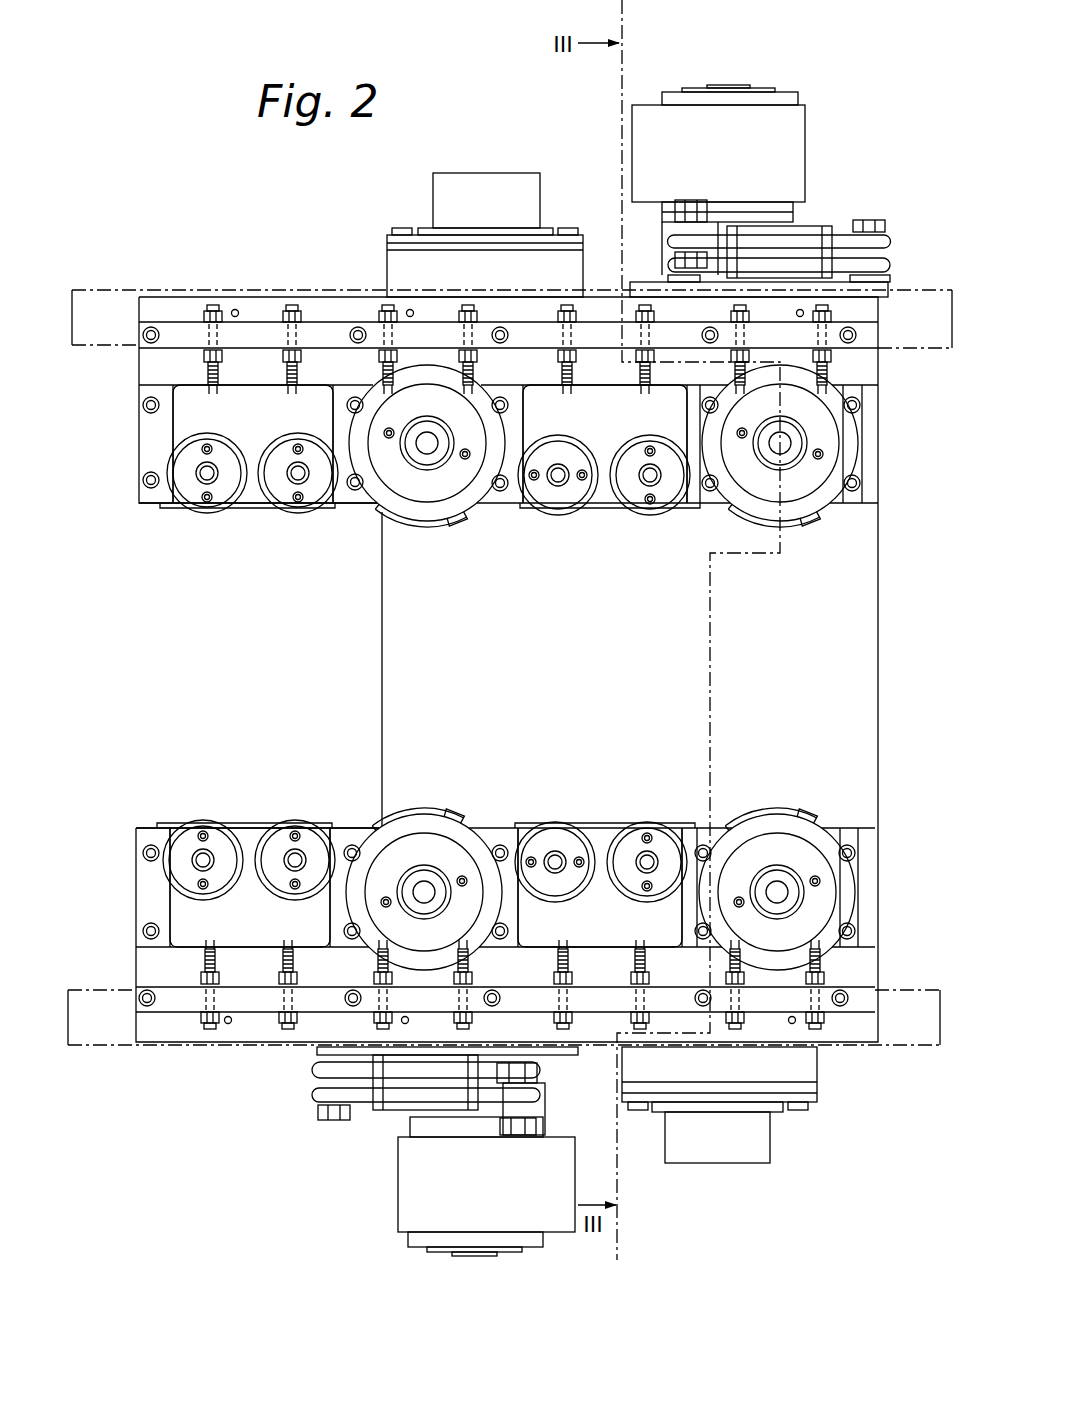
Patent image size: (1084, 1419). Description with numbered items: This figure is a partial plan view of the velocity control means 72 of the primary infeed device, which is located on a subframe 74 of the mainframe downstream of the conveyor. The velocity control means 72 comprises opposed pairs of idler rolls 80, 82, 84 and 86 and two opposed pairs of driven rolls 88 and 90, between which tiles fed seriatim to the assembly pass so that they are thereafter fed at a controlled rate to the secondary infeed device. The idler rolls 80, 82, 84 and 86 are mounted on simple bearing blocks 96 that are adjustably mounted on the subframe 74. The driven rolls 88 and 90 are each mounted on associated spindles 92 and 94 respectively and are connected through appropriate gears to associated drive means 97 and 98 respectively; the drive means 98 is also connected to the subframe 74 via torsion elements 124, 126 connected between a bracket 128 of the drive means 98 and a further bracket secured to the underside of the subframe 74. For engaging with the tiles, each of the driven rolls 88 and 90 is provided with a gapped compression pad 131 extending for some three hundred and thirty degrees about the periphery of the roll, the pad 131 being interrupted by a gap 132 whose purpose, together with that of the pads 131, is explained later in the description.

The velocity control means 72 is at (167, 1077).
The subframe 74 is at (507, 669).
The idler roll 80 is at (203, 513).
The idler roll 82 is at (298, 513).
The idler roll 84 is at (568, 515).
The idler roll 86 is at (660, 515).
The driven roll 88 is at (447, 488).
The driven roll 90 is at (813, 487).
The spindle 92 is at (420, 438).
The spindle 94 is at (783, 453).
The bearing block 96 is at (428, 666).
The drive means 97 is at (347, 1165).
The drive means 98 is at (825, 150).
The torsion element 124 is at (892, 264).
The torsion element 126 is at (891, 244).
The bracket 128 is at (668, 228).
The compression pad 131 is at (388, 497).
The gap 132 is at (400, 509).